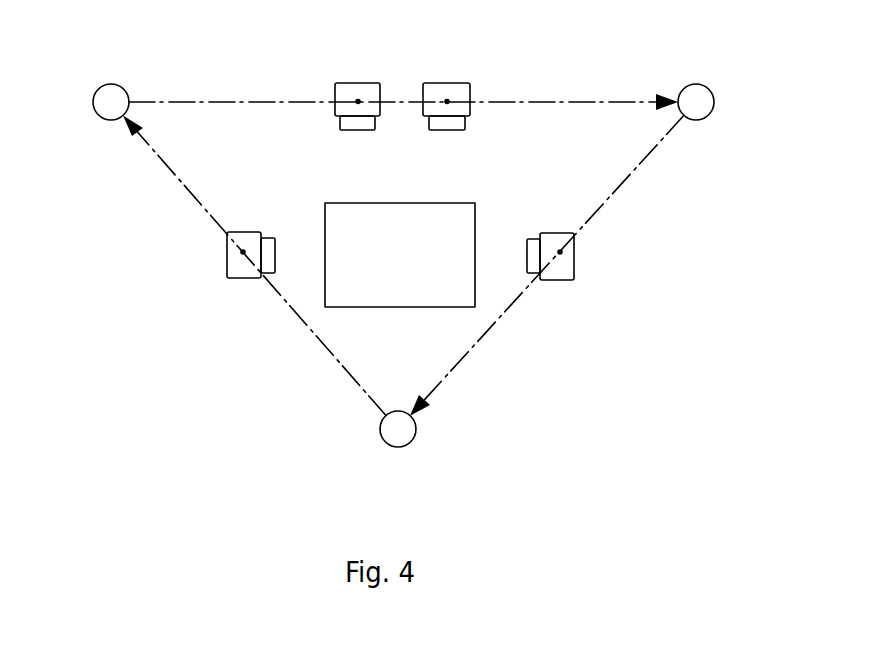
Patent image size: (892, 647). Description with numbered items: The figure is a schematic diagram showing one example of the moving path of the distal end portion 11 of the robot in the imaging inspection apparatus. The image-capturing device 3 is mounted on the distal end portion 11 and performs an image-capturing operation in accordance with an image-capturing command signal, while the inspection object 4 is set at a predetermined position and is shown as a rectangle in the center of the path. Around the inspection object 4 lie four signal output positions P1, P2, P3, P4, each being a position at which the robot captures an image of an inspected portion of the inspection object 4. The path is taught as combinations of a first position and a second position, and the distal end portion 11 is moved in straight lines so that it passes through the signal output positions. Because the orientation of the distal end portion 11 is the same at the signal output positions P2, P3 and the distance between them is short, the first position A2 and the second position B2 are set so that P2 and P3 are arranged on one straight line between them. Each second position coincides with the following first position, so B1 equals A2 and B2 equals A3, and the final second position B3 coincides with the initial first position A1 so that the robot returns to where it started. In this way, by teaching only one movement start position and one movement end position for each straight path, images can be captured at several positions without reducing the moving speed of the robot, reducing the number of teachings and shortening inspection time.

The image-capturing device 3 is at (402, 183).
The distal end portion 11 is at (402, 183).
The inspection object 4 is at (442, 292).
The signal output position P1 is at (243, 252).
The signal output position P2 is at (358, 101).
The signal output position P3 is at (447, 101).
The signal output position P4 is at (560, 252).
The first position A1 is at (391, 460).
The first position A2 is at (110, 100).
The first position A3 is at (697, 100).
The second position B1 is at (105, 76).
The second position B2 is at (691, 73).
The second position B3 is at (398, 432).